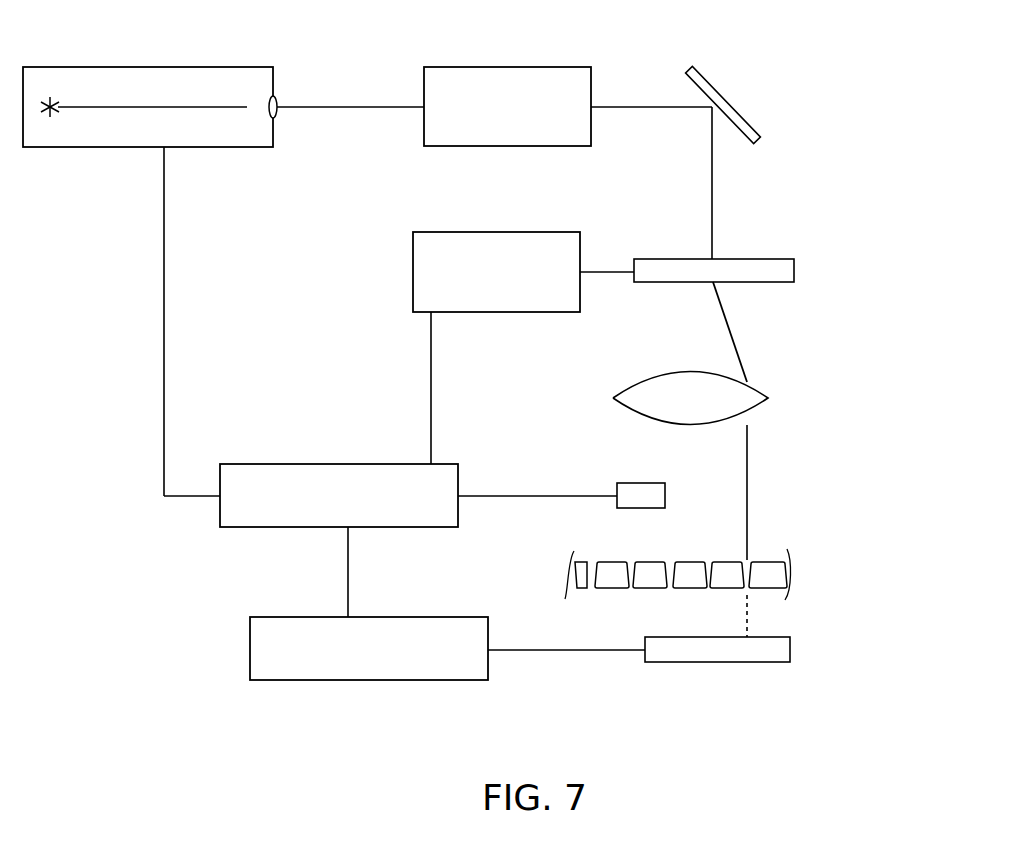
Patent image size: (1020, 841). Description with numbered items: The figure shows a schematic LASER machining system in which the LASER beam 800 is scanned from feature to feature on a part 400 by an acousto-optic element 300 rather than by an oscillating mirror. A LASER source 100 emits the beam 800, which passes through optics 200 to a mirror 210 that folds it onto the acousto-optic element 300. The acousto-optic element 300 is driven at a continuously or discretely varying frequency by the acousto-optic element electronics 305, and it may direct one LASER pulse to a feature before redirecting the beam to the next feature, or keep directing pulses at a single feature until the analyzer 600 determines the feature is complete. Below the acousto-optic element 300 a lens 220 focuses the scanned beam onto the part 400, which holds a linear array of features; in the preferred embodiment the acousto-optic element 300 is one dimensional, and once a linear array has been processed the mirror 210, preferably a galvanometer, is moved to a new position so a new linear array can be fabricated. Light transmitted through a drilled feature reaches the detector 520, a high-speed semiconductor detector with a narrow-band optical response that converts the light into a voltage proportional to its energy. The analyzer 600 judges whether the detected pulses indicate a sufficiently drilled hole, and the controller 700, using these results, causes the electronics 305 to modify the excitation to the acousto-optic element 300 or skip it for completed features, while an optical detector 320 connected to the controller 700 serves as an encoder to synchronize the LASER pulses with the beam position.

The laser source 100 is at (77, 147).
The LASER beam 800 is at (345, 105).
The optics 200 is at (424, 130).
The mirror 210 is at (712, 80).
The acousto-optic element 300 is at (794, 259).
The acousto-optic element electronics 305 is at (413, 274).
The lens 220 is at (757, 405).
The optical detector 320 is at (617, 485).
The part 400 is at (787, 572).
The controller 700 is at (240, 464).
The analyzer 600 is at (250, 645).
The detector 520 is at (745, 662).